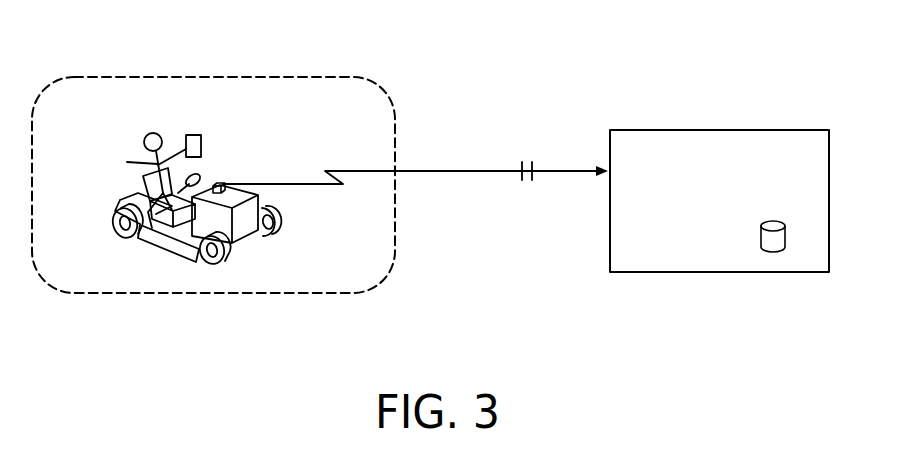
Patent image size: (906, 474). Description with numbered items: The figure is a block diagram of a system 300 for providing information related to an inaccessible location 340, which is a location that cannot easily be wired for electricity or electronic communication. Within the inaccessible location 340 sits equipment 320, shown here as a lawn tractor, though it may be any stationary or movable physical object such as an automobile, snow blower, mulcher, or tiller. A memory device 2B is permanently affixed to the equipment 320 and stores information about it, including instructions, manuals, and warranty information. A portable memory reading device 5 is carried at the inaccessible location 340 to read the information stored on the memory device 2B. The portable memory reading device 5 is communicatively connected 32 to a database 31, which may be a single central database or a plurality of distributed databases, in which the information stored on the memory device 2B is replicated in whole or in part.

The system 300 is at (240, 35).
The inaccessible location 340 is at (132, 306).
The equipment 320 is at (252, 249).
The portable memory reading device 5 is at (195, 126).
The memory device 2B is at (222, 168).
The communicative connection 32 is at (455, 158).
The database 31 is at (681, 120).